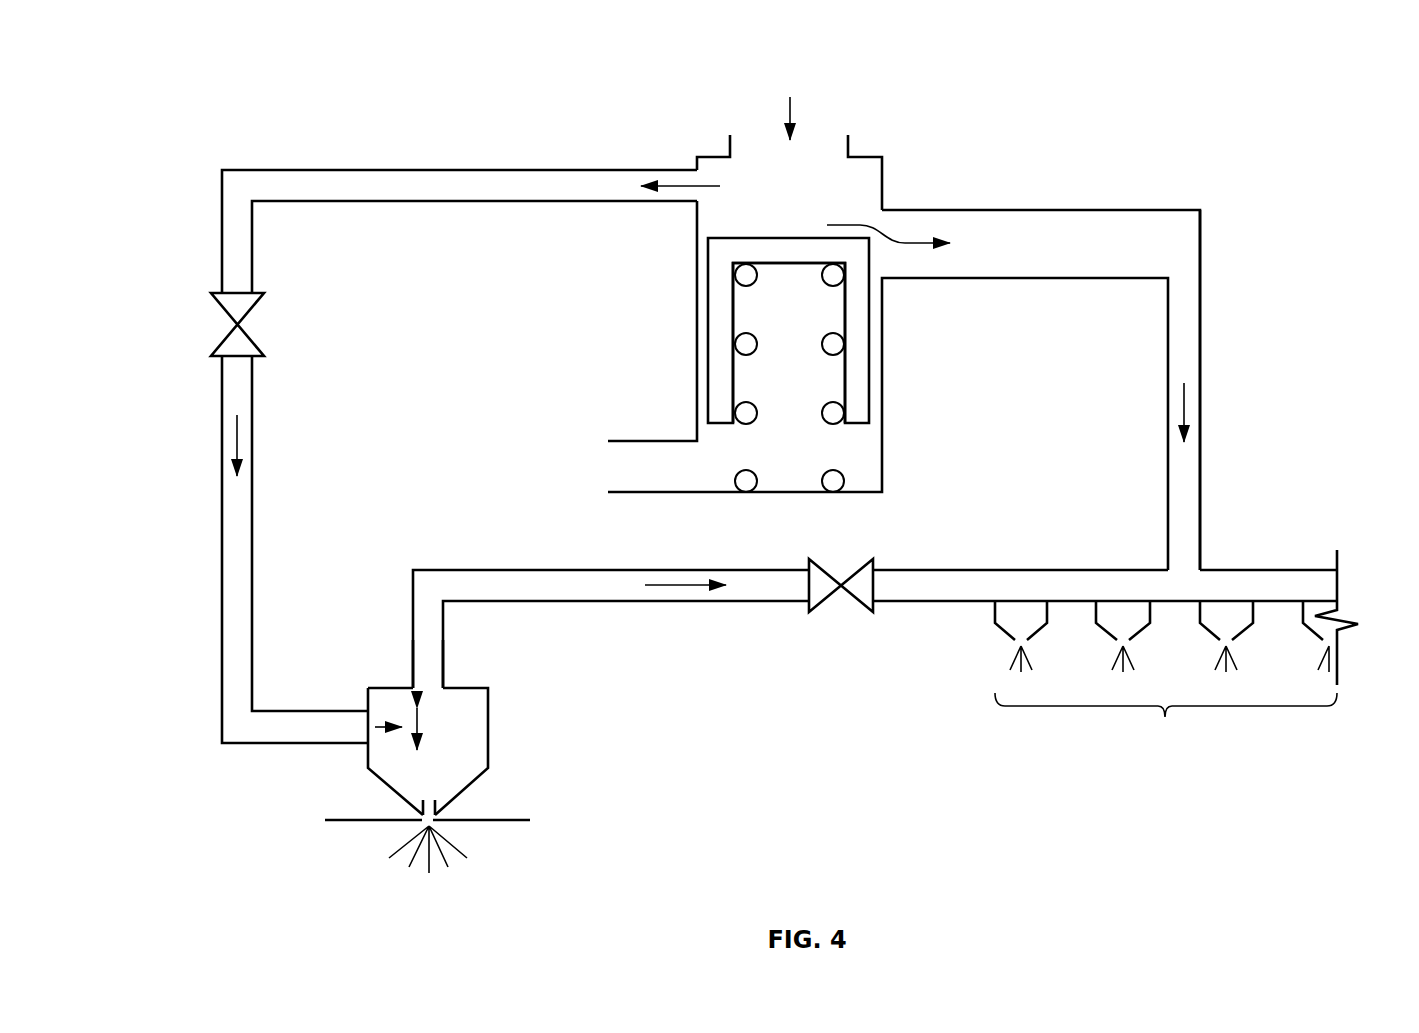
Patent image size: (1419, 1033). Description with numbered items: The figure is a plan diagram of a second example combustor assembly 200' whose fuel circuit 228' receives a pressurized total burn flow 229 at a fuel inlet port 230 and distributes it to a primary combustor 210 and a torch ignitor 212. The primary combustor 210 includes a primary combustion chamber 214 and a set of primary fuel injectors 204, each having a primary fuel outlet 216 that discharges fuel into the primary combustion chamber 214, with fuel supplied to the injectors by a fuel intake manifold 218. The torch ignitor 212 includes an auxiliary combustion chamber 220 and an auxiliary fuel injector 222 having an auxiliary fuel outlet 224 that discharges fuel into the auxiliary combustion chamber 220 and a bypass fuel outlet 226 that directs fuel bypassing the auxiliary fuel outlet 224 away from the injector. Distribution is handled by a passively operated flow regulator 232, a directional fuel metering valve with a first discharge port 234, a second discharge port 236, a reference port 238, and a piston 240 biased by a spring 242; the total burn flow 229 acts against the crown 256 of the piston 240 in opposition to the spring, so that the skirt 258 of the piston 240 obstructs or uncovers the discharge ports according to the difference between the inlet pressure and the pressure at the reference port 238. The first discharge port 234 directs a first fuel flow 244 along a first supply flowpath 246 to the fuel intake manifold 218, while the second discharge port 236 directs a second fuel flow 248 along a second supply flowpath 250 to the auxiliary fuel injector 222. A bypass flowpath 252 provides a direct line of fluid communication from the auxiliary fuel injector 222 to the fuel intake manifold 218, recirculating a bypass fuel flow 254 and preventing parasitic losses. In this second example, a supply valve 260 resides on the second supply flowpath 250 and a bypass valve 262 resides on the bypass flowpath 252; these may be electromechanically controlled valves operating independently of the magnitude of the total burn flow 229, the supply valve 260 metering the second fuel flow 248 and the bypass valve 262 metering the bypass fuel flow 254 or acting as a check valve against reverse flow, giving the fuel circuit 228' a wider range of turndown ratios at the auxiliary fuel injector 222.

The combustor assembly 200' is at (258, 46).
The second supply flowpath 250 is at (220, 238).
The supply valve 260 is at (250, 340).
The second fuel flow 248 is at (240, 445).
The second discharge port 236 is at (697, 168).
The total burn flow 229 is at (790, 117).
The fuel inlet port 230 is at (848, 154).
The first discharge port 234 is at (882, 208).
The fuel circuit 228' is at (946, 357).
The crown 256 is at (770, 238).
The piston 240 is at (706, 294).
The flow regulator 232 is at (628, 344).
The reference port 238 is at (608, 441).
The skirt 258 is at (858, 373).
The spring 242 is at (838, 411).
The first fuel flow 244 is at (928, 246).
The first supply flowpath 246 is at (1202, 314).
The primary combustor 210 is at (1305, 548).
The fuel intake manifold 218 is at (1160, 596).
The primary fuel outlet 216 is at (1025, 645).
The primary fuel injectors 204 is at (1166, 722).
The primary combustion chamber 214 is at (1091, 804).
The bypass valve 262 is at (855, 568).
The bypass fuel flow 254 is at (683, 585).
The bypass flowpath 252 is at (699, 606).
The bypass fuel outlet 226 is at (445, 688).
The auxiliary fuel injector 222 is at (507, 729).
The auxiliary fuel outlet 224 is at (437, 815).
The auxiliary combustion chamber 220 is at (407, 916).
The torch ignitor 212 is at (278, 782).